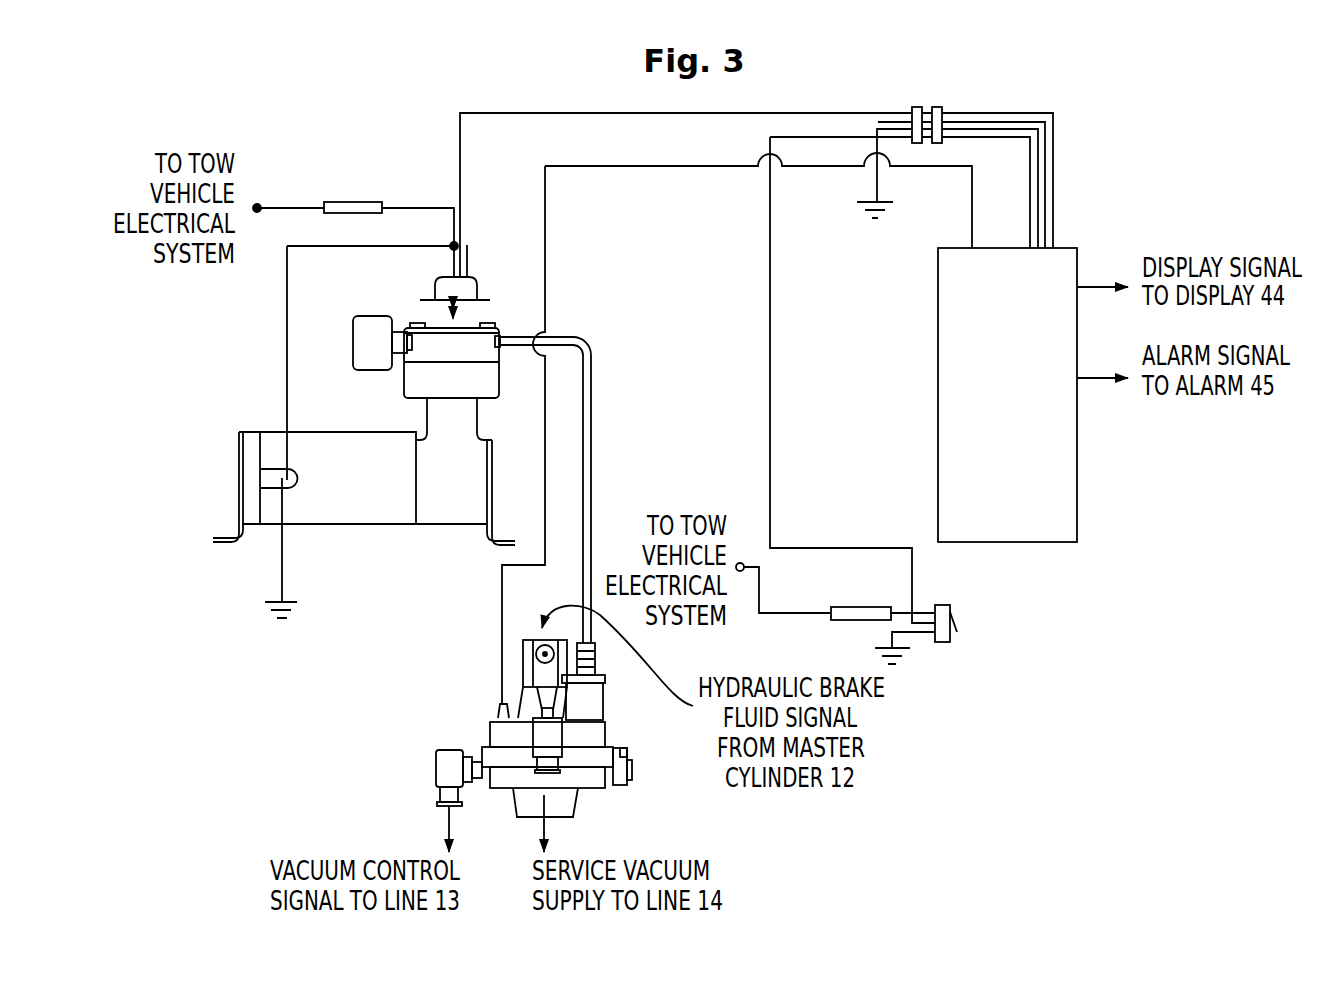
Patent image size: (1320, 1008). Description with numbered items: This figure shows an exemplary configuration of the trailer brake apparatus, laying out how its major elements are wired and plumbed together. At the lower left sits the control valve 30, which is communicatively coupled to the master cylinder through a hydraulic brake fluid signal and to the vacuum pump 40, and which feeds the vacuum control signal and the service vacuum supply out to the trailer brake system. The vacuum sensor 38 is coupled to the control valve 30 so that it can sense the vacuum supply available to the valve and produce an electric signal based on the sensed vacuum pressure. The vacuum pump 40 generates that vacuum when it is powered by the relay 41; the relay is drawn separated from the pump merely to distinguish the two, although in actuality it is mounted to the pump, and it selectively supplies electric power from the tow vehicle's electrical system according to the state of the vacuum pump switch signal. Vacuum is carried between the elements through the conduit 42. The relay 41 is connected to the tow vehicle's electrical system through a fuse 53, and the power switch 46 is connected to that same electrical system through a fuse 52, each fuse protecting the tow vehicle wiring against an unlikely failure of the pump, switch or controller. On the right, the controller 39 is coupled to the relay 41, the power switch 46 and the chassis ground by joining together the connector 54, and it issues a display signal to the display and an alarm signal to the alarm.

The control valve 30 is at (412, 739).
The vacuum sensor 38 is at (487, 705).
The controller 39 is at (1077, 484).
The vacuum pump 40 is at (363, 541).
The relay 41 is at (483, 273).
The conduit 42 is at (591, 425).
The power switch 46 is at (964, 612).
The fuse 52 is at (853, 604).
The fuse 53 is at (353, 197).
The connector 54 is at (928, 101).